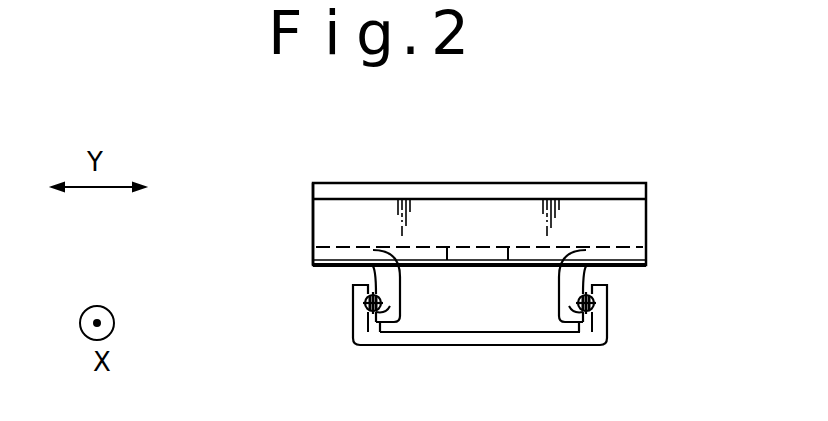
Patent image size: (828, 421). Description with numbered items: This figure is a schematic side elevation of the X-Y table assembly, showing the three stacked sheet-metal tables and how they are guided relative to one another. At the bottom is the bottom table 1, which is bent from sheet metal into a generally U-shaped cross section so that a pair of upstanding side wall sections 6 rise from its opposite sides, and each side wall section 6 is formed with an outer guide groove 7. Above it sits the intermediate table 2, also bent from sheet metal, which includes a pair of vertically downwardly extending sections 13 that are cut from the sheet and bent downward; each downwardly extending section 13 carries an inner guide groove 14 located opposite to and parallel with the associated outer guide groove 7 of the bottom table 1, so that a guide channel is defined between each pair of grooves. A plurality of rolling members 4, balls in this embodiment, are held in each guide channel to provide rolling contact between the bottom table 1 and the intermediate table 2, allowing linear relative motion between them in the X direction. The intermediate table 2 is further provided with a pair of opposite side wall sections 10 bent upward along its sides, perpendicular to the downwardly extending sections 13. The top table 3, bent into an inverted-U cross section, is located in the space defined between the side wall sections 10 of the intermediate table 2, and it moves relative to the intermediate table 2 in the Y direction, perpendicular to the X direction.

The bottom table 1 is at (480, 338).
The intermediate table 2 is at (317, 212).
The top table 3 is at (437, 192).
The rolling members 4 is at (367, 314).
The side wall sections 6 is at (353, 335).
The outer guide groove 7 is at (381, 318).
The side wall sections 10 is at (623, 232).
The downwardly extending sections 13 is at (403, 297).
The inner guide groove 14 is at (365, 301).